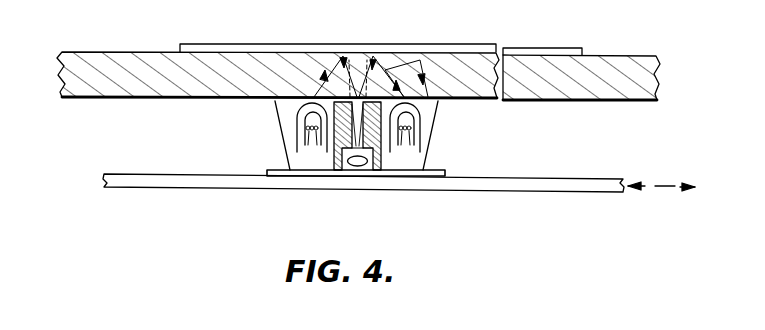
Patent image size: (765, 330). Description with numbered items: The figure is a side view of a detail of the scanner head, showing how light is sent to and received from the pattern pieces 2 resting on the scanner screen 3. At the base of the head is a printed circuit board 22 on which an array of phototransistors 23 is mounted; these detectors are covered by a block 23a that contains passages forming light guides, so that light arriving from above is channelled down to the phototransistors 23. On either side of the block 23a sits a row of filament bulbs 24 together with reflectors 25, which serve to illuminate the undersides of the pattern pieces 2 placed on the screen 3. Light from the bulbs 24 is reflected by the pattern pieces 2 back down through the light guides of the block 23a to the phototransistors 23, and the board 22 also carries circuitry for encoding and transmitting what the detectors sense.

The pattern piece 2 is at (283, 44).
The scanner screen 3 is at (131, 52).
The printed circuit board 22 is at (280, 188).
The phototransistor 23 is at (360, 167).
The block 23a is at (337, 150).
The filament bulb 24 is at (300, 128).
The reflector 25 is at (277, 113).